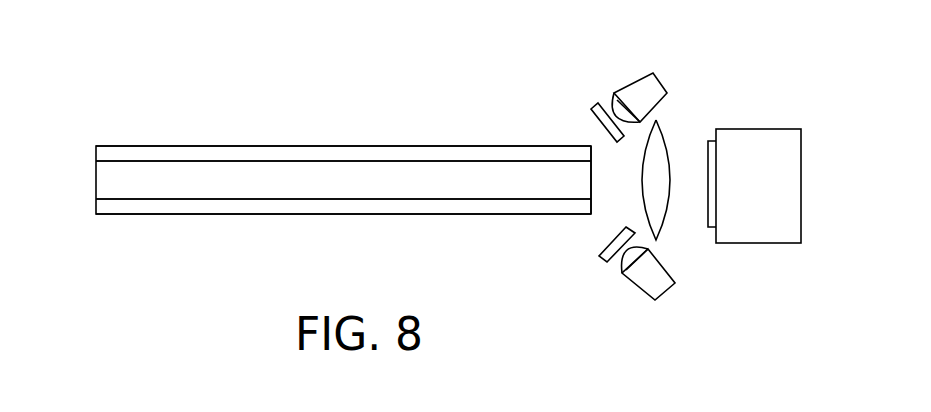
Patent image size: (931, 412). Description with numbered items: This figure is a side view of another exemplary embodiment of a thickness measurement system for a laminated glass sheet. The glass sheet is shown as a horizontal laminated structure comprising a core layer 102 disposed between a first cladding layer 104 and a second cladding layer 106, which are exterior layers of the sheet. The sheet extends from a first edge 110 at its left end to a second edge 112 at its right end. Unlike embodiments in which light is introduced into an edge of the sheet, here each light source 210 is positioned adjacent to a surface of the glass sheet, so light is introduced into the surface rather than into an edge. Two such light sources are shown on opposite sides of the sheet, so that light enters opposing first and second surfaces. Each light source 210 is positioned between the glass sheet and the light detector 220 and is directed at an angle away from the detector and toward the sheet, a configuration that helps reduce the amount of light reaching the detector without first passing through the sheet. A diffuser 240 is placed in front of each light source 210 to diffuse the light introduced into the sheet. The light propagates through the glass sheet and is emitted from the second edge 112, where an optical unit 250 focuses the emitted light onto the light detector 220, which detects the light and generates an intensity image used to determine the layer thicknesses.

The core layer 102 is at (343, 155).
The first cladding layer 104 is at (343, 136).
The second cladding layer 106 is at (343, 223).
The first edge 110 is at (303, 180).
The second edge 112 is at (684, 216).
The light source 210 is at (647, 179).
The light detector 220 is at (774, 169).
The diffuser 240 is at (606, 249).
The optical unit 250 is at (700, 163).